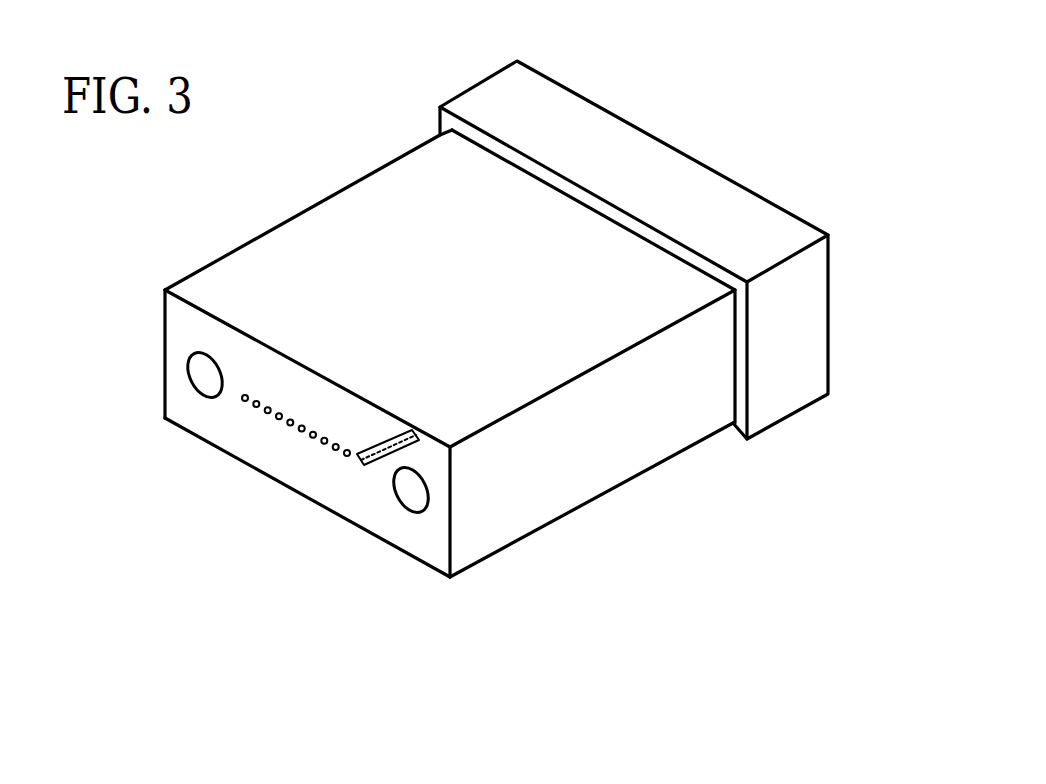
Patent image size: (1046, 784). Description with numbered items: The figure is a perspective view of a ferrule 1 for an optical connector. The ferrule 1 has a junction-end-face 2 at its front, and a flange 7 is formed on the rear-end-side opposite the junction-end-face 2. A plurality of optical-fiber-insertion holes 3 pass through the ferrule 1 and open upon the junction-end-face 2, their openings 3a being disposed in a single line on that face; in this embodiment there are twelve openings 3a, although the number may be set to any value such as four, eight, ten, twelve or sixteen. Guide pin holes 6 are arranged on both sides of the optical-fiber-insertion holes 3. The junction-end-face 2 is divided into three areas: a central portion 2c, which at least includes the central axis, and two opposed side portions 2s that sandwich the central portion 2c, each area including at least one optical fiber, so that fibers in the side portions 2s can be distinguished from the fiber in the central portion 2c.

The ferrule 1 is at (712, 70).
The junction-end-face 2 is at (232, 355).
The central portion 2c is at (304, 452).
The side portions 2s is at (175, 358).
The optical-fiber-insertion holes 3 is at (388, 442).
The openings 3a is at (280, 418).
The guide pin holes 6 is at (203, 378).
The flange 7 is at (787, 390).